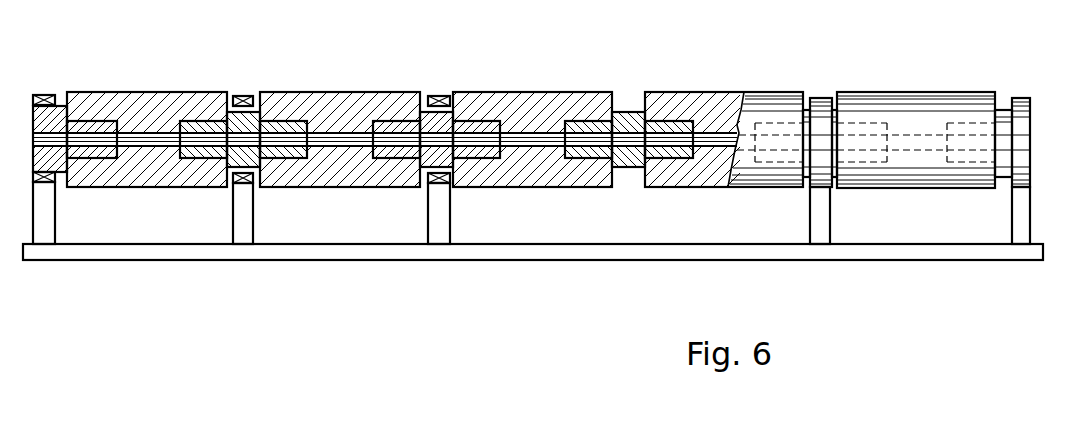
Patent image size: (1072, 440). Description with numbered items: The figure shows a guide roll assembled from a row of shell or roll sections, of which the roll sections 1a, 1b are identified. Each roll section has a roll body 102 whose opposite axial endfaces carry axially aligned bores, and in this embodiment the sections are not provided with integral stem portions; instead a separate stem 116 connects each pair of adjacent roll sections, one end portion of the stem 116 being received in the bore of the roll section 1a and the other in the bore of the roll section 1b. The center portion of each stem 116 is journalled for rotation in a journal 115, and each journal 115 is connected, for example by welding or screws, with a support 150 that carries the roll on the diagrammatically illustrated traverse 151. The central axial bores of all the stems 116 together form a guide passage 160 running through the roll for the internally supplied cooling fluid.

The roll section 1a is at (185, 65).
The roll section 1b is at (340, 102).
The roll body 102 is at (363, 102).
The journal 115 is at (438, 102).
The stem 116 is at (452, 122).
The support 150 is at (437, 237).
The traverse 151 is at (503, 248).
The guide passage 160 is at (140, 137).